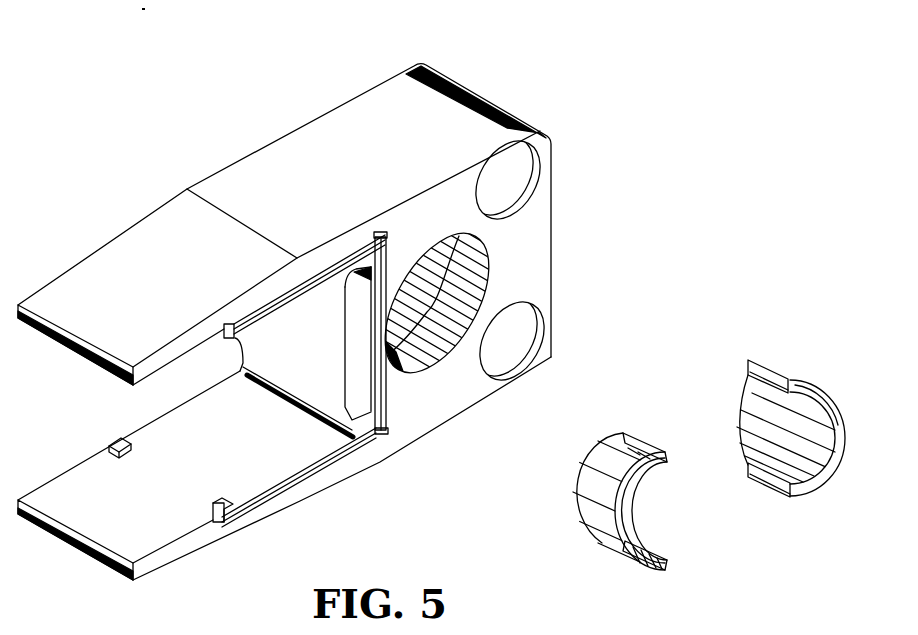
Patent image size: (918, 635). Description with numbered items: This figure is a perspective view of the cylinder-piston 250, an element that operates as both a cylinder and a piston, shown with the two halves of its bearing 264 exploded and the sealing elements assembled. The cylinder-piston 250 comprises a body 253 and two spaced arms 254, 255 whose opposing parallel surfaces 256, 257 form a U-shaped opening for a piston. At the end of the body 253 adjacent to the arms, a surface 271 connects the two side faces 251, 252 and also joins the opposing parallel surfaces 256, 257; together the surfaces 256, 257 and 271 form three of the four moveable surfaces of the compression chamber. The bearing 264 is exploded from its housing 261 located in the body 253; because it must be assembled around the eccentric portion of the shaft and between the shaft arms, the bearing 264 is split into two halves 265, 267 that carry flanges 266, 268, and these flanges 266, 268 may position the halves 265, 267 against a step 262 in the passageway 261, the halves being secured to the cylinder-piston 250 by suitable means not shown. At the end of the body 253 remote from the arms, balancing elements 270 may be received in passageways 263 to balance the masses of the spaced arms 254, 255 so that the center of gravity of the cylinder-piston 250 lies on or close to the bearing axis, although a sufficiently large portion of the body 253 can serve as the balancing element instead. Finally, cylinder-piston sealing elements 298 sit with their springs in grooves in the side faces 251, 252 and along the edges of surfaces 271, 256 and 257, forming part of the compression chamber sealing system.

The cylinder-piston 250 is at (481, 89).
The side face 251 is at (277, 133).
The side face 252 is at (412, 435).
The body 253 is at (513, 258).
The spaced arm 254 is at (113, 285).
The spaced arm 255 is at (275, 510).
The opposing parallel surface 256 is at (155, 377).
The opposing parallel surface 257 is at (177, 523).
The housing 261 is at (433, 355).
The step 262 is at (457, 237).
The passageway 263 is at (538, 175).
The bearing 264 is at (668, 452).
The bearing half 265 is at (793, 368).
The flange 266 is at (792, 500).
The bearing half 267 is at (598, 545).
The flange 268 is at (670, 570).
The balancing element 270 is at (517, 162).
The surface 271 is at (293, 380).
The cylinder-piston sealing element 298 is at (272, 302).